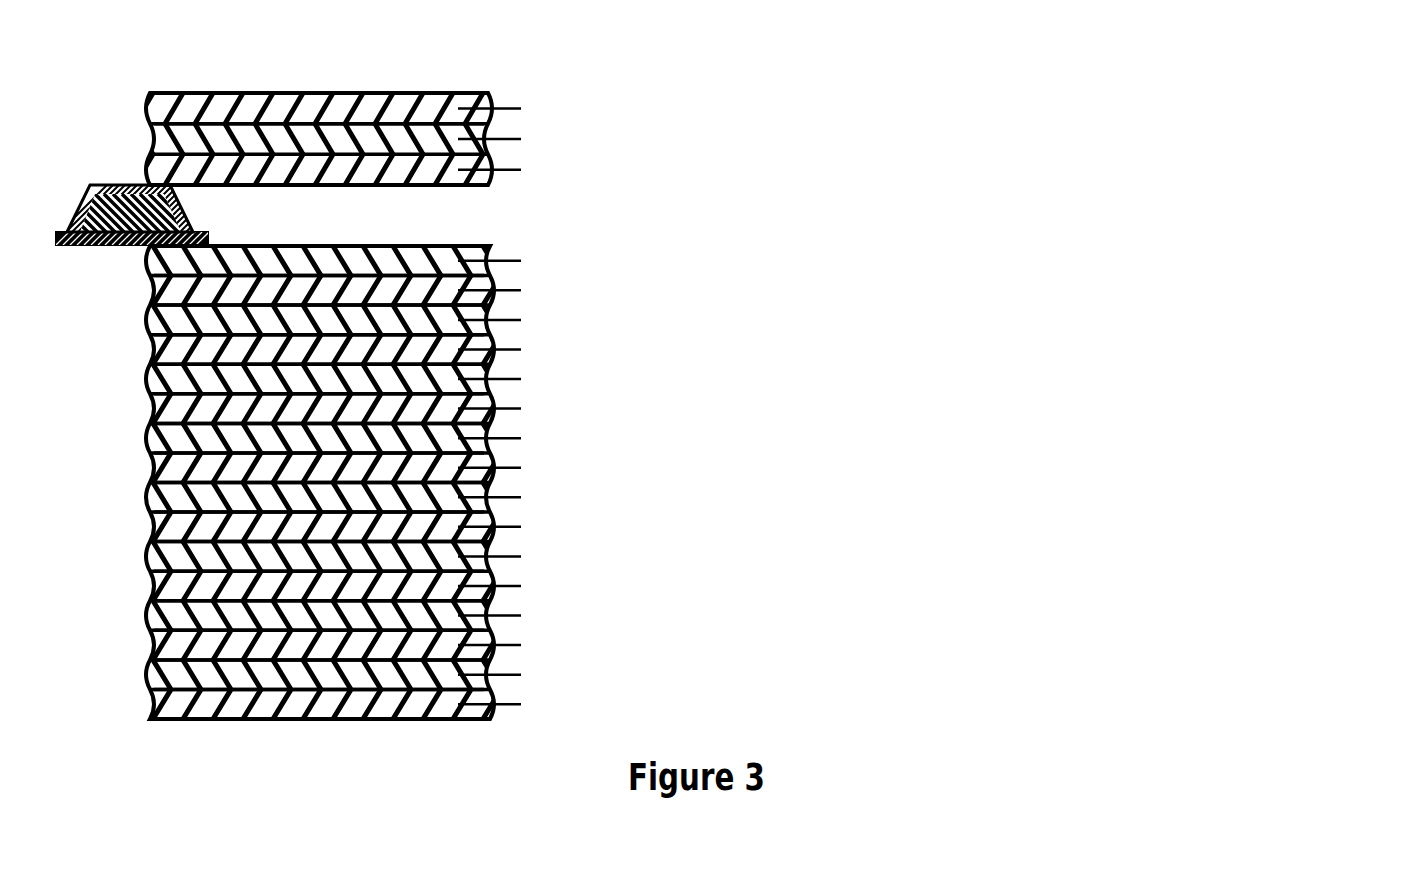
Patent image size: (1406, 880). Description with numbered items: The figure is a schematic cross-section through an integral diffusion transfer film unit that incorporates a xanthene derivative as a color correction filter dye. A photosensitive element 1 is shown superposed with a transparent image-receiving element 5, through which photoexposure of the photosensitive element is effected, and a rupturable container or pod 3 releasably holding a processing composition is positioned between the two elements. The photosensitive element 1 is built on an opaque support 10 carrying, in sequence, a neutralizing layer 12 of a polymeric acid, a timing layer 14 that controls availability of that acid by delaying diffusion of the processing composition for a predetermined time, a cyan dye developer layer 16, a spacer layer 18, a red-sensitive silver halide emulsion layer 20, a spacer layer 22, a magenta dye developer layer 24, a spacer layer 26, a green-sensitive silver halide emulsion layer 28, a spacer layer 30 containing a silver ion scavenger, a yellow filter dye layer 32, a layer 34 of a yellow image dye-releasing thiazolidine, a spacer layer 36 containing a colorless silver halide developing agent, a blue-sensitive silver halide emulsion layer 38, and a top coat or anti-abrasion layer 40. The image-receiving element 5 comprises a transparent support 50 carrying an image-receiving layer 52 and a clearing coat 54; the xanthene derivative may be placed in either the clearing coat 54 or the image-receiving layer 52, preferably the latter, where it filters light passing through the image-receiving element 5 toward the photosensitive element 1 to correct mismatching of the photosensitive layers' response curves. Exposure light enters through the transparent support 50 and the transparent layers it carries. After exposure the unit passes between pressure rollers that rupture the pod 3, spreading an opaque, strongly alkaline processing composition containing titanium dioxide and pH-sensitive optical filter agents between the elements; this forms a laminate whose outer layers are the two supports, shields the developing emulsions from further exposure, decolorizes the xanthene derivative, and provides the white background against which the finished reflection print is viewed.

The photosensitive element 1 is at (55, 712).
The rupturable container or pod 3 is at (64, 216).
The image-receiving element 5 is at (53, 102).
The opaque support 10 is at (176, 704).
The neutralizing layer 12 is at (176, 675).
The timing layer 14 is at (176, 645).
The cyan dye developer layer 16 is at (176, 616).
The spacer layer 18 is at (176, 586).
The red-sensitive silver halide emulsion layer 20 is at (176, 556).
The spacer layer 22 is at (176, 527).
The magenta dye developer layer 24 is at (176, 497).
The spacer layer 26 is at (176, 468).
The green-sensitive silver halide emulsion layer 28 is at (176, 438).
The spacer layer containing a silver ion scavenger 30 is at (176, 409).
The yellow filter dye layer 32 is at (176, 379).
The yellow image dye-releasing thiazolidine layer 34 is at (176, 350).
The spacer layer containing a colorless silver halide developing agent 36 is at (176, 320).
The blue-sensitive silver halide emulsion layer 38 is at (176, 290).
The anti-abrasion layer 40 is at (176, 261).
The transparent support 50 is at (176, 108).
The image-receiving layer 52 is at (176, 139).
The clearing coat 54 is at (176, 170).